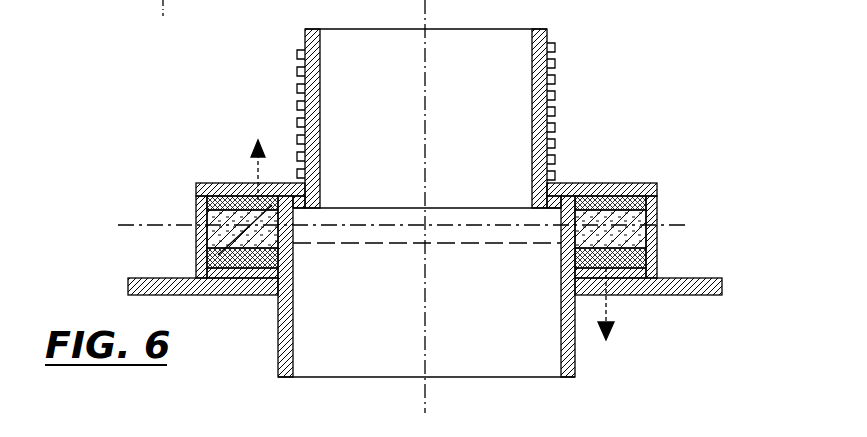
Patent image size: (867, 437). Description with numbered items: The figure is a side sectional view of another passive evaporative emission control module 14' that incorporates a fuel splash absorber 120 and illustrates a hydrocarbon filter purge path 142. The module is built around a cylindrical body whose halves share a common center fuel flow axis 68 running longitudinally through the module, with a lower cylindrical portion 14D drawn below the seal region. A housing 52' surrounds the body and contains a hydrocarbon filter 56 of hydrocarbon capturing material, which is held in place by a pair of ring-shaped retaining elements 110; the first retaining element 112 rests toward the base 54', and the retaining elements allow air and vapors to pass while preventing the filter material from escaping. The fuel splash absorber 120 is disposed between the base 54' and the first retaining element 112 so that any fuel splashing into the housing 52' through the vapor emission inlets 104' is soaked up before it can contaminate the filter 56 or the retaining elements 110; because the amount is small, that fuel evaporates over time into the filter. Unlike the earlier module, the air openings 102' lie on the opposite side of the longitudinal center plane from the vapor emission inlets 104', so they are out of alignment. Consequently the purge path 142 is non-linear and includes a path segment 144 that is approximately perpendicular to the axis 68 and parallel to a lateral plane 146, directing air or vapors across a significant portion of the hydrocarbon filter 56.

The passive evaporative emission control module 14' is at (477, 14).
The center fuel flow axis 68 is at (428, 75).
The path segment 144 is at (379, 243).
The lateral plane 146 is at (480, 225).
The air openings 102' is at (231, 209).
The first retaining element 112 is at (210, 239).
The fuel splash absorber 120 is at (225, 279).
The lower cylinder portion 14D is at (425, 395).
The hydrocarbon filter purge path 142 is at (612, 306).
The hydrocarbon filter 56 is at (658, 210).
The housing 52' is at (703, 237).
The retaining elements 110 is at (586, 228).
The base 54' is at (661, 343).
The vapor emission inlets 104' is at (635, 347).